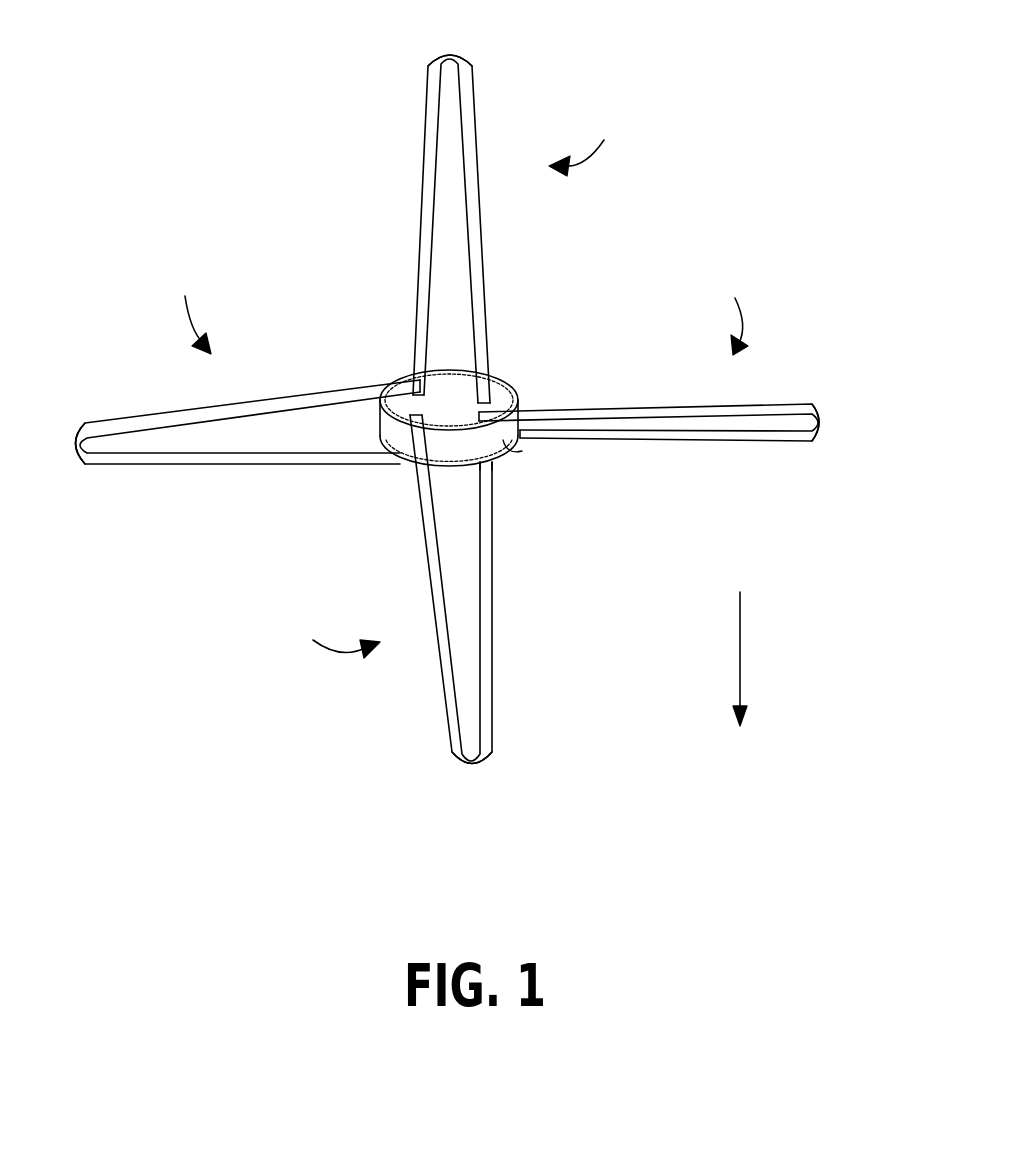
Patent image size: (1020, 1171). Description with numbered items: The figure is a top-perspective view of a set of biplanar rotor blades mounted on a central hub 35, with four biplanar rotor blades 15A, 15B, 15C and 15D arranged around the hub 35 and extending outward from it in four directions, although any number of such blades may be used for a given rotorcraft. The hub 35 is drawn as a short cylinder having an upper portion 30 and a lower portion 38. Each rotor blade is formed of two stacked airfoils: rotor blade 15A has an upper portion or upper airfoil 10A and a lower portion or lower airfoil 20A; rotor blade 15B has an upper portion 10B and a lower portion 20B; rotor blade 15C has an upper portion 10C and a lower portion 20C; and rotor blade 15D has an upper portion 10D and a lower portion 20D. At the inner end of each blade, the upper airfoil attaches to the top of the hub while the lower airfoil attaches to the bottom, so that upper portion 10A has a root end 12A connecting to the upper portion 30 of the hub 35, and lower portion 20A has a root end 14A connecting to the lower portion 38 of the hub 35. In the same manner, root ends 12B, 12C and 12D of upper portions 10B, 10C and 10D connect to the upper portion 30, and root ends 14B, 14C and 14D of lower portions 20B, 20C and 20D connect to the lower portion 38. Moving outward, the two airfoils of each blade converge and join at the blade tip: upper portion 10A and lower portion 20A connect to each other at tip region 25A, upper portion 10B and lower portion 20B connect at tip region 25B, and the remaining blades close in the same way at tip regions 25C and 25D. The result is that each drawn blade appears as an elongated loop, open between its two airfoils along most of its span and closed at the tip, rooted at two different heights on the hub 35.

The upper portion of hub 30 is at (438, 387).
The hub 35 is at (503, 440).
The lower portion of hub 38 is at (502, 457).
The upper portion 10A is at (473, 153).
The upper portion 10B is at (665, 410).
The upper portion 10C is at (438, 658).
The upper portion 10D is at (205, 412).
The lower portion 20A is at (427, 172).
The lower portion 20B is at (775, 443).
The lower portion 20C is at (494, 630).
The lower portion 20D is at (233, 462).
The tip region 25A is at (452, 52).
The tip region 25B is at (821, 423).
The tip region 25C is at (470, 766).
The tip region 25D is at (78, 443).
The root end 12A is at (487, 391).
The root end 12B is at (520, 425).
The root end 12C is at (415, 426).
The root end 12D is at (410, 393).
The root end 14A is at (418, 378).
The root end 14B is at (523, 433).
The root end 14C is at (483, 470).
The root end 14D is at (393, 459).
The biplanar rotor blade 15A is at (592, 146).
The biplanar rotor blade 15B is at (739, 312).
The biplanar rotor blade 15C is at (326, 643).
The biplanar rotor blade 15D is at (185, 312).